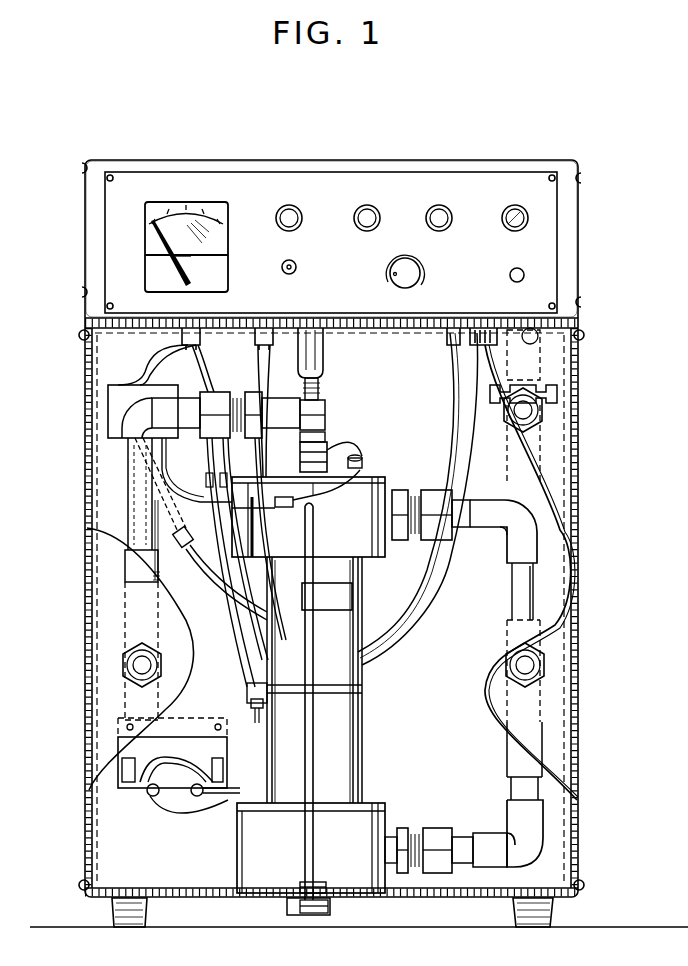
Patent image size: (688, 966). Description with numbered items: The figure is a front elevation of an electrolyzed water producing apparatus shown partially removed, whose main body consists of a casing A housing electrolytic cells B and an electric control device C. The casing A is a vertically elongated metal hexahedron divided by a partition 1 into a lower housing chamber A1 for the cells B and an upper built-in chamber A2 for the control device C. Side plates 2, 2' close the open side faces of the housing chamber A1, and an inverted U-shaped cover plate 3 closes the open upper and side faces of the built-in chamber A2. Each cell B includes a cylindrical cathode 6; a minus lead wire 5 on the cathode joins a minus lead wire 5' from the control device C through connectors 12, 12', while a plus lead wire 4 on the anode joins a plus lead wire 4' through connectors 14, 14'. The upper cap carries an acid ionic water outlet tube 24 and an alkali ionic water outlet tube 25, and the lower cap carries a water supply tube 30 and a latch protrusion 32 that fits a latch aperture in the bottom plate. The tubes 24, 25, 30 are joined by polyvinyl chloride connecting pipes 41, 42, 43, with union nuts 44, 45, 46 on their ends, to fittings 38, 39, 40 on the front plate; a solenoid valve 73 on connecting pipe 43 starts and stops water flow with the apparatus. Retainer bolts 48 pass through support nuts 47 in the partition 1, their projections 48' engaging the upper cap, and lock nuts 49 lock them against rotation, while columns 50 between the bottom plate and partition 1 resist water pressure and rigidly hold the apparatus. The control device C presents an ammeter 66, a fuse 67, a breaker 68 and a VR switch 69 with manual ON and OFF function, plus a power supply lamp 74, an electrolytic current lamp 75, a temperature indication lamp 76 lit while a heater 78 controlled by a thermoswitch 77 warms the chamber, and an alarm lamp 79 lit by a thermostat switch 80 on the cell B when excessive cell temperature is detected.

The partition 1 is at (118, 328).
The side plate 2 is at (120, 465).
The side plate 2' is at (591, 608).
The cover plate 3 is at (540, 161).
The plus lead wire 4 is at (321, 499).
The plus lead wire 4' is at (183, 485).
The minus lead wire 5 is at (250, 562).
The minus lead wire 5' is at (128, 540).
The cylindrical cathode 6 is at (364, 770).
The connector 12 is at (320, 507).
The connector 12' is at (262, 520).
The connector 14 is at (219, 573).
The connector 14' is at (119, 654).
The acid ionic water outlet tube 24 is at (330, 440).
The alkali ionic water outlet tube 25 is at (393, 500).
The water supply tube 30 is at (402, 875).
The latch protrusion 32 is at (292, 916).
The fitting 38 is at (120, 665).
The fitting 39 is at (545, 675).
The fitting 40 is at (534, 415).
The connecting pipe 41 is at (125, 497).
The connecting pipe 42 is at (508, 580).
The connecting pipe 43 is at (508, 788).
The union nut 44 is at (224, 392).
The union nut 45 is at (433, 535).
The union nut 46 is at (440, 872).
The support nut 47 is at (324, 366).
The retainer bolt 48 is at (336, 420).
The projection 48' is at (339, 512).
The lock nut 49 is at (322, 392).
The column 50 is at (310, 847).
The ammeter 66 is at (148, 240).
The fuse 67 is at (512, 268).
The breaker 68 is at (283, 264).
The VR switch 69 is at (392, 268).
The solenoid valve 73 is at (541, 361).
The power supply lamp 74 is at (504, 212).
The electrolytic current lamp 75 is at (356, 214).
The temperature indication lamp 76 is at (428, 212).
The thermoswitch 77 is at (352, 612).
The heater 78 is at (172, 794).
The alarm lamp 79 is at (278, 214).
The thermostat switch 80 is at (264, 706).
The casing A is at (580, 280).
The housing chamber A1 is at (500, 598).
The built-in chamber A2 is at (319, 180).
The electrolytic cell B is at (236, 843).
The electric control device C is at (450, 180).